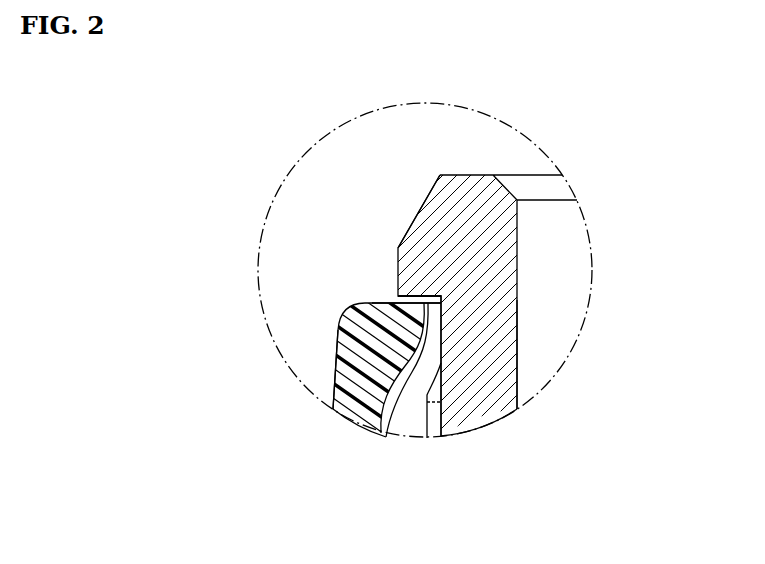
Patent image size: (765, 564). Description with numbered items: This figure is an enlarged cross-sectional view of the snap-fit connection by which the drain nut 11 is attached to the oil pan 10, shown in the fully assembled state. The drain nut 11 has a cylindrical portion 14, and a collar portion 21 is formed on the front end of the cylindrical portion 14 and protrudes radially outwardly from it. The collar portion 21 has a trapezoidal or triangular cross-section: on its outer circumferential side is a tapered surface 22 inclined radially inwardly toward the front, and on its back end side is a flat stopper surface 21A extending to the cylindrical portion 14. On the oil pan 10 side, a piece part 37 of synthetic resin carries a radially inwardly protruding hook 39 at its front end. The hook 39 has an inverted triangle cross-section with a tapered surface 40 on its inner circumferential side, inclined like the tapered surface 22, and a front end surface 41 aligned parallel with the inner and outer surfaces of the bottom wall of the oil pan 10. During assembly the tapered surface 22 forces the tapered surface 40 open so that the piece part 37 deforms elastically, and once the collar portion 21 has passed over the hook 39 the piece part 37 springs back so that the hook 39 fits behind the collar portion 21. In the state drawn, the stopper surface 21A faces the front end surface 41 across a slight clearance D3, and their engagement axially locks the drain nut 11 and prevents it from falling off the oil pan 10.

The oil pan 10 is at (345, 378).
The drain nut 11 is at (529, 355).
The cylindrical portion 14 is at (483, 402).
The collar portion 21 is at (418, 267).
The stopper surface 21A is at (399, 293).
The tapered surface 22 is at (415, 217).
The piece part 37 is at (333, 407).
The hook 39 is at (347, 333).
The tapered surface 40 is at (385, 437).
The front end surface 41 is at (418, 296).
The clearance D3 is at (410, 300).